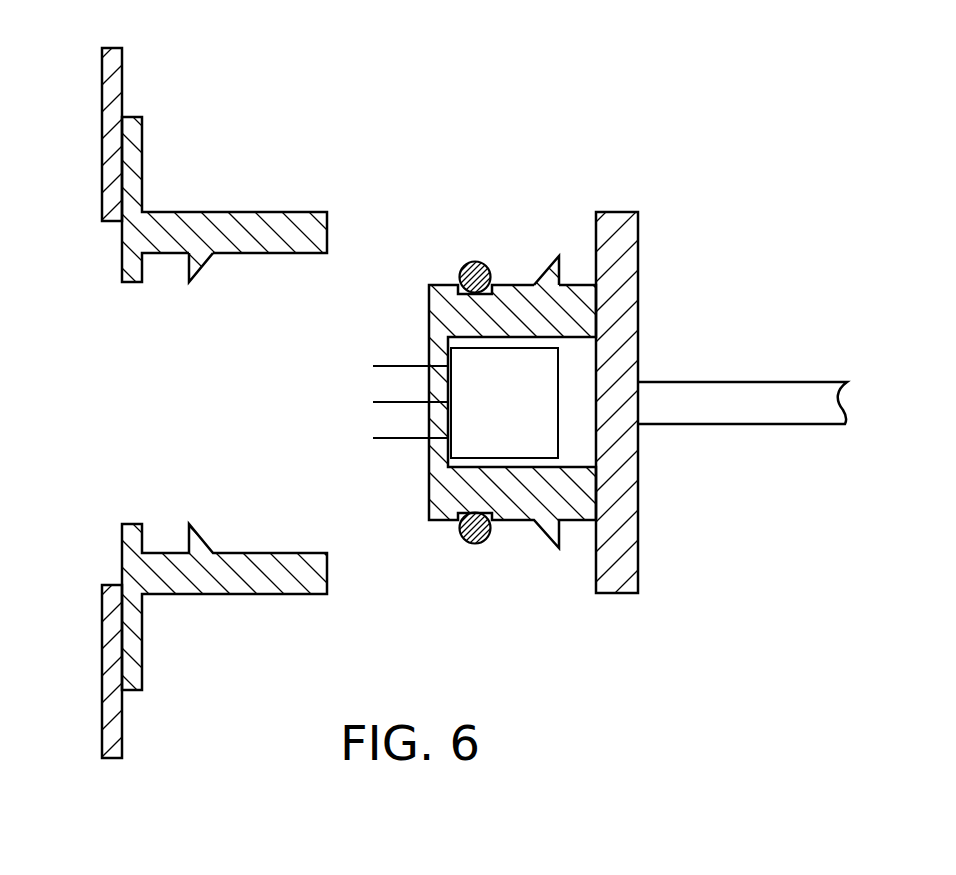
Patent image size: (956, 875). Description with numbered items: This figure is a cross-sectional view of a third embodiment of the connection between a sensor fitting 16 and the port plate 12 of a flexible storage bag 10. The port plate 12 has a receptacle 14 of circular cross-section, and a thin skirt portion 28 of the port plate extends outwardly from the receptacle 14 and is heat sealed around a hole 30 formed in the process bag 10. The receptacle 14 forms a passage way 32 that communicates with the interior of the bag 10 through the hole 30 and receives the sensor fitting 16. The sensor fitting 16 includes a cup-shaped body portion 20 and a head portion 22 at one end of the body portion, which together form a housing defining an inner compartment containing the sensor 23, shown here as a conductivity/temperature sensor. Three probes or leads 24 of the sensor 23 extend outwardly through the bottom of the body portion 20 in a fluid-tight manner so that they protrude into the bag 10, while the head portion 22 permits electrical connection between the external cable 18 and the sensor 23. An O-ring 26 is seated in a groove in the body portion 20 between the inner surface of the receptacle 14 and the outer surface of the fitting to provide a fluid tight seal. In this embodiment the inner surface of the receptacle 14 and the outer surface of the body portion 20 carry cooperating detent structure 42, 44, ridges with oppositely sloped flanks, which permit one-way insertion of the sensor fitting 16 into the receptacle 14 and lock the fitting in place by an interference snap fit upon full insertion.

The flexible storage bag 10 is at (103, 70).
The port plate 12 is at (141, 135).
The receptacle 14 is at (200, 212).
The detent structure 42 is at (197, 265).
The hole 30 is at (108, 603).
The skirt portion 28 is at (141, 608).
The passage way 32 is at (288, 435).
The sensor fitting 16 is at (623, 199).
The head portion 22 is at (634, 524).
The body portion 20 is at (575, 505).
The detent structure 44 is at (551, 262).
The O-ring 26 is at (477, 262).
The sensor 23 is at (500, 365).
The leads 24 is at (383, 364).
The external cable 18 is at (797, 393).